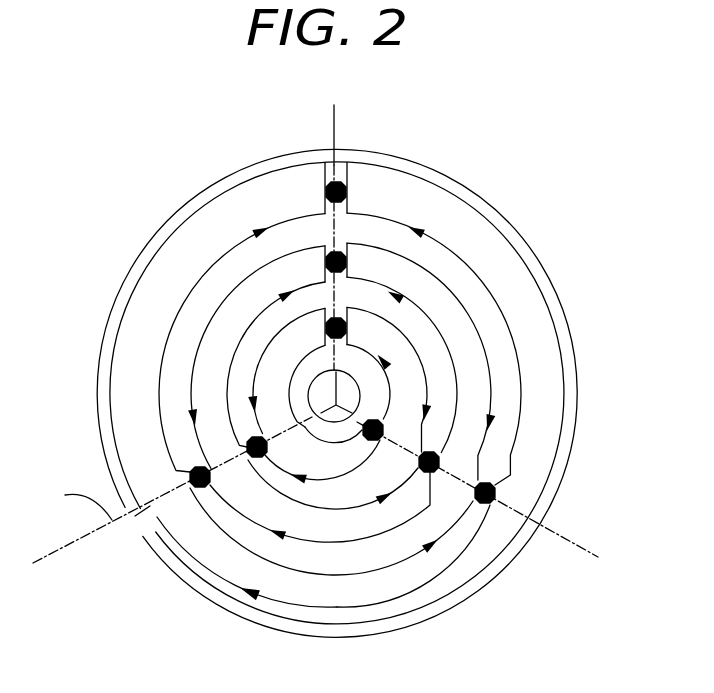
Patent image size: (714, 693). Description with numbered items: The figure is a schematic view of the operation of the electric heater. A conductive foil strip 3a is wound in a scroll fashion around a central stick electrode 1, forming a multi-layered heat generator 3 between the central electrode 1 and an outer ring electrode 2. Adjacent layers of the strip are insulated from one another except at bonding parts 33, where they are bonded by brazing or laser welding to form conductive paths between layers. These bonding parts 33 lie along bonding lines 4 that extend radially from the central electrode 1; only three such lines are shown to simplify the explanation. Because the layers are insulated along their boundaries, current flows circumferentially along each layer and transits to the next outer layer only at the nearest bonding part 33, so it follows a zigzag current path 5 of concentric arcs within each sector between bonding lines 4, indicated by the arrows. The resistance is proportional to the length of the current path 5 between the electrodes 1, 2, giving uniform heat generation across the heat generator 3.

The central stick electrode 1 is at (320, 392).
The ring electrode 2 is at (563, 312).
The multi-layered heat generator 3 is at (480, 248).
The conductive foil strip 3a is at (542, 413).
The bonding lines 4 is at (60, 498).
The current path 5 is at (228, 583).
The bonding parts 33 is at (497, 481).